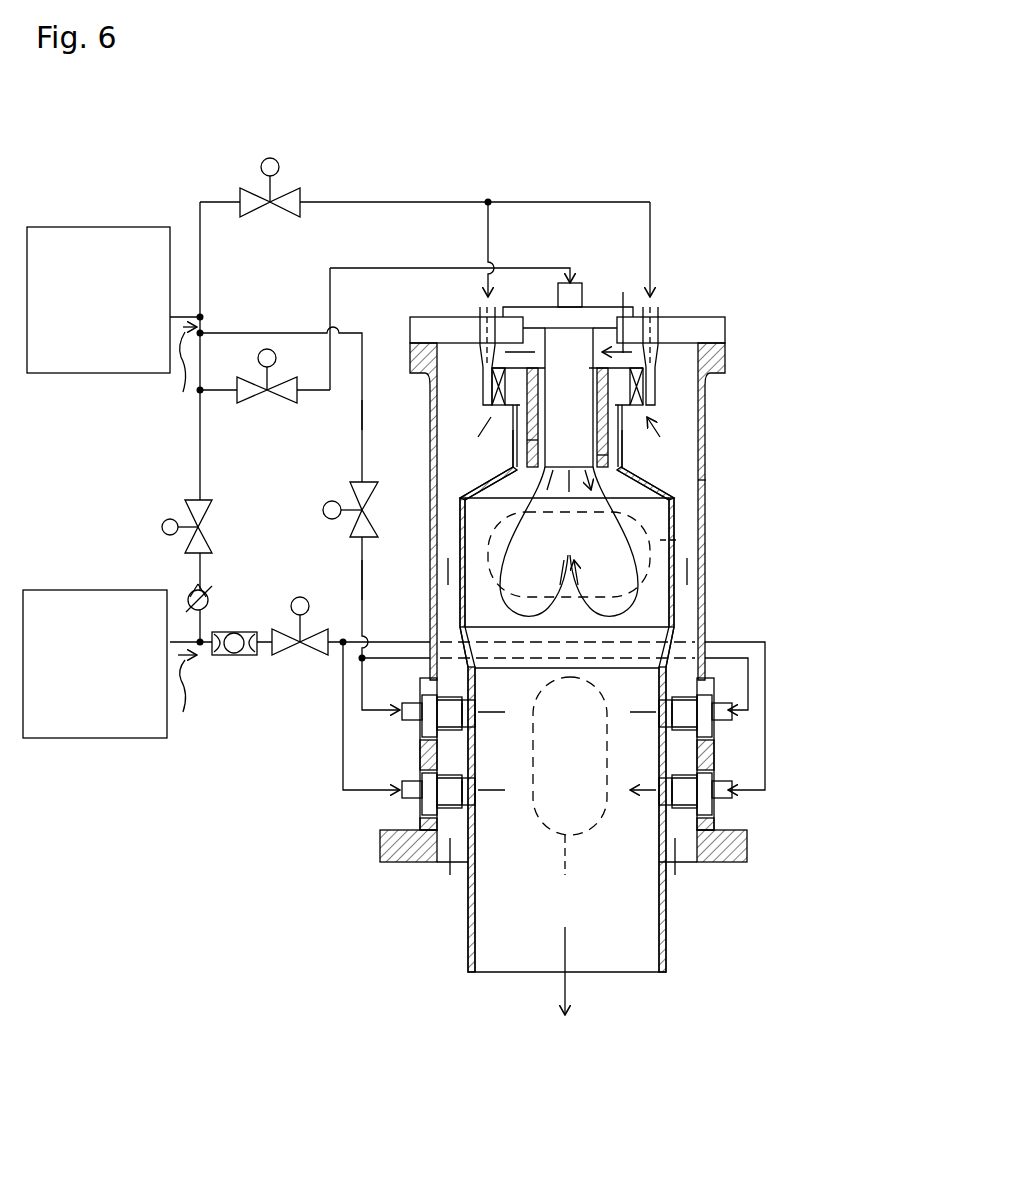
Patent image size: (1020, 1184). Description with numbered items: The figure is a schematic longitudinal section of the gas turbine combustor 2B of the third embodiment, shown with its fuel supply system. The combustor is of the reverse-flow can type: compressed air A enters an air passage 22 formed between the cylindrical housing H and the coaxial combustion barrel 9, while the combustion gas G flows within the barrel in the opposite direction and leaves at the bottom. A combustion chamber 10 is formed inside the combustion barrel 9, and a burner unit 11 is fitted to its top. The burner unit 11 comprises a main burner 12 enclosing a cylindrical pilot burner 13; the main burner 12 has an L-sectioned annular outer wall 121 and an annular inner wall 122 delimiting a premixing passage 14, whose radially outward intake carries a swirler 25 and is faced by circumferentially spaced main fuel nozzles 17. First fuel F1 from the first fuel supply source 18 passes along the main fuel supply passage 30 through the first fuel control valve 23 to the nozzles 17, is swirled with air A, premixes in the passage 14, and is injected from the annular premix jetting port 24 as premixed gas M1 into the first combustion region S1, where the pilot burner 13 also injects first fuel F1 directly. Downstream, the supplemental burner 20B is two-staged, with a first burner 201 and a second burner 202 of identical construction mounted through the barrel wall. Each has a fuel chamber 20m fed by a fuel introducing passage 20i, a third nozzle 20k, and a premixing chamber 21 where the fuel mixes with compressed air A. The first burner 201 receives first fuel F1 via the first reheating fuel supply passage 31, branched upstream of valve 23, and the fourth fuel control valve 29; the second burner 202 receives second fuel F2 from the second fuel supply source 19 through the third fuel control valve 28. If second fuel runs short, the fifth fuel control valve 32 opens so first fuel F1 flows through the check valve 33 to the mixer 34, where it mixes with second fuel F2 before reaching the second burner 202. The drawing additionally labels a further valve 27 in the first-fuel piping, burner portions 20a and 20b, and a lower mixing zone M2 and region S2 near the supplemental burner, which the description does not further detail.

The first fuel supply source 18 is at (147, 227).
The second fuel supply source 19 is at (147, 590).
The first fuel control valve 23 is at (285, 190).
The valve 27 is at (280, 385).
The third fuel control valve 28 is at (315, 626).
The fourth fuel control valve 29 is at (361, 482).
The main fuel supply passage 30 is at (397, 202).
The first reheating fuel supply passage 31 is at (362, 413).
The fifth fuel control valve 32 is at (204, 500).
The check valve 33 is at (208, 598).
The mixer 34 is at (238, 656).
The gas turbine combustor 2B is at (691, 310).
The main fuel nozzle 17 is at (485, 355).
The swirler 25 is at (494, 385).
The burner unit 11 is at (760, 390).
The main burner 12 is at (637, 445).
The pilot burner 13 is at (630, 412).
The annular outer wall 121 is at (650, 462).
The annular inner wall 122 is at (654, 480).
The premixing passage 14 is at (430, 463).
The annular premix jetting port 24 is at (428, 488).
The combustion barrel 9 is at (675, 617).
The combustion chamber 10 is at (588, 618).
The air passage 22 is at (681, 634).
The housing H is at (705, 494).
The premixed gas M1 is at (505, 568).
The first combustion region S1 is at (681, 541).
The compressed air A is at (650, 435).
The first fuel F1 is at (365, 374).
The second fuel F2 is at (183, 696).
The supplemental burner 20B is at (536, 762).
The first burner 201 is at (420, 737).
The second burner 202 is at (415, 786).
The burner flange 20a is at (380, 838).
The fuel chamber 20m is at (425, 681).
The fuel introducing passage 20i is at (400, 711).
The third nozzle 20k is at (452, 845).
The burner body 20b is at (466, 834).
The premixing chamber 21 is at (672, 810).
The secondary mixing zone M2 is at (492, 792).
The secondary combustion space S2 is at (572, 869).
The combustion gas G is at (567, 995).